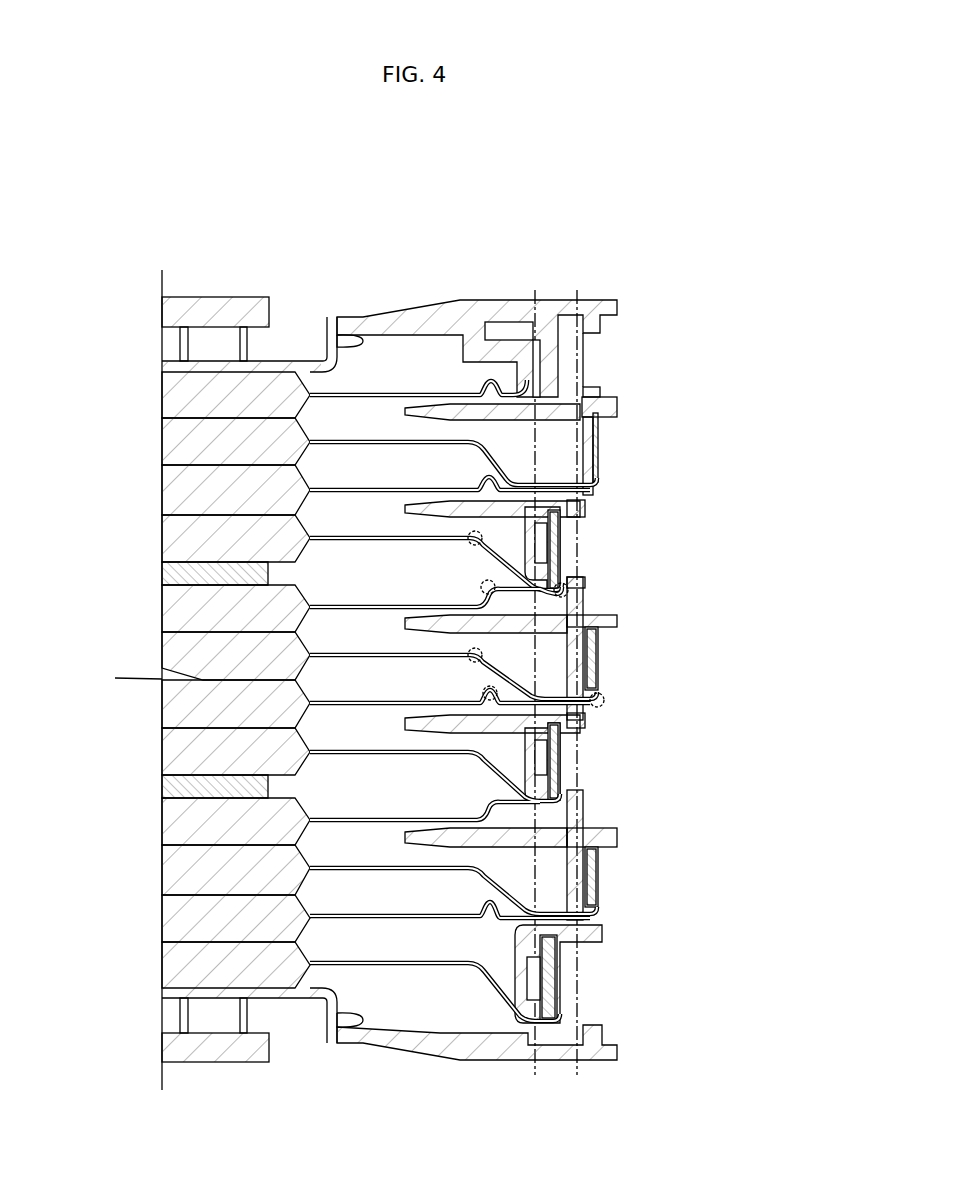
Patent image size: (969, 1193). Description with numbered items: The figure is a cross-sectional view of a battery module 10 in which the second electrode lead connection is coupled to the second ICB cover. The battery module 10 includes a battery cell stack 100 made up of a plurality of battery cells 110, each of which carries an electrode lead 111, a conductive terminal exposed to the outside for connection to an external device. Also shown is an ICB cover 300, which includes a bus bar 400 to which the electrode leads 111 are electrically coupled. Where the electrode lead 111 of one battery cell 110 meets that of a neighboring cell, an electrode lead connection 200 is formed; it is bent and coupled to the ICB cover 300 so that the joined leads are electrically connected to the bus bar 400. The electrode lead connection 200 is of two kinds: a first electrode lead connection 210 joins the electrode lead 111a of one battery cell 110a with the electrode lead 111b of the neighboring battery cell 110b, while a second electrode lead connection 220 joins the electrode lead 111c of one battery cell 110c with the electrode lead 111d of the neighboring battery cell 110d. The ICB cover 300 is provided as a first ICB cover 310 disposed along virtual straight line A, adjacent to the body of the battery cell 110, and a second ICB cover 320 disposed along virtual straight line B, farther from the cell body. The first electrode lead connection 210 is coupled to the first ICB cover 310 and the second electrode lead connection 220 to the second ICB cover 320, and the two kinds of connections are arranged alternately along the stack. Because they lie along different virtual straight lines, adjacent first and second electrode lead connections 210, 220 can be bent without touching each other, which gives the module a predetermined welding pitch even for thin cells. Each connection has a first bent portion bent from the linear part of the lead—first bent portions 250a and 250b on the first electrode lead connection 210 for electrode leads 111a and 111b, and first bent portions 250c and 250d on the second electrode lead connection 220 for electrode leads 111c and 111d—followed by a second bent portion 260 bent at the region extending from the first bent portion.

The battery module 10 is at (184, 139).
The battery cell stack 100 is at (88, 372).
The battery cell 110 is at (91, 514).
The battery cell 110a is at (171, 540).
The battery cell 110b is at (171, 609).
The battery cell 110c is at (171, 655).
The battery cell 110d is at (171, 710).
The electrode lead 111 is at (473, 263).
The electrode lead 111a is at (348, 532).
The electrode lead 111b is at (348, 600).
The electrode lead 111c is at (348, 647).
The electrode lead 111d is at (348, 695).
The electrode lead connection 200 is at (703, 642).
The first electrode lead connection 210 is at (600, 545).
The second electrode lead connection 220 is at (627, 670).
The first bent portion 250a is at (471, 543).
The first bent portion 250b is at (481, 587).
The first bent portion 250c is at (471, 661).
The first bent portion 250d is at (483, 694).
The second bent portion 260 is at (568, 590).
The ICB cover 300 is at (703, 492).
The first ICB cover 310 is at (578, 503).
The second ICB cover 320 is at (598, 633).
The bus bar 400 is at (598, 445).